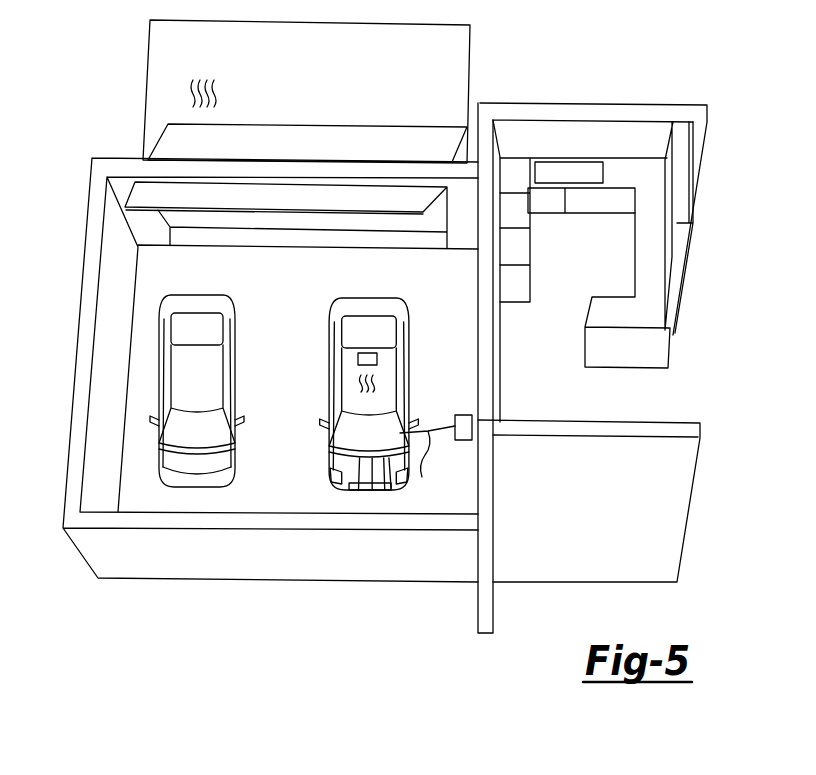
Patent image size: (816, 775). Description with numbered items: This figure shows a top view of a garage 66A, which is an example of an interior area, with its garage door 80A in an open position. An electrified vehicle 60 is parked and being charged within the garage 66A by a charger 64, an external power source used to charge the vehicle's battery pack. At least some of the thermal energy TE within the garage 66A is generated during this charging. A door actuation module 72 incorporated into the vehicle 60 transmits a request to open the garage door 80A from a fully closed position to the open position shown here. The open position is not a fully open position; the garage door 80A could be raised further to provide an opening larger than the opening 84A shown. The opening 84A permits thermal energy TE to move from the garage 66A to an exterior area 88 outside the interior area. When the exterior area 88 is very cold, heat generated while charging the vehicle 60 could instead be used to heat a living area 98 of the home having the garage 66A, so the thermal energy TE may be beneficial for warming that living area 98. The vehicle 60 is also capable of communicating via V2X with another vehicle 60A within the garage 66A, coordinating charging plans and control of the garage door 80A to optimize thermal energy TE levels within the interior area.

The electrified vehicle 60 is at (338, 447).
The vehicle 60A is at (193, 383).
The charger 64 is at (473, 428).
The garage 66A is at (279, 478).
The door actuation module 72 is at (358, 360).
The garage door 80A is at (405, 172).
The opening 84A is at (296, 229).
The exterior area 88 is at (306, 90).
The living area 98 is at (602, 244).
The thermal energy TE is at (186, 78).